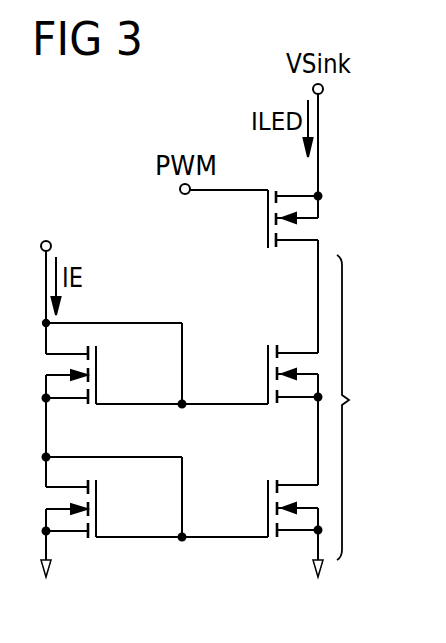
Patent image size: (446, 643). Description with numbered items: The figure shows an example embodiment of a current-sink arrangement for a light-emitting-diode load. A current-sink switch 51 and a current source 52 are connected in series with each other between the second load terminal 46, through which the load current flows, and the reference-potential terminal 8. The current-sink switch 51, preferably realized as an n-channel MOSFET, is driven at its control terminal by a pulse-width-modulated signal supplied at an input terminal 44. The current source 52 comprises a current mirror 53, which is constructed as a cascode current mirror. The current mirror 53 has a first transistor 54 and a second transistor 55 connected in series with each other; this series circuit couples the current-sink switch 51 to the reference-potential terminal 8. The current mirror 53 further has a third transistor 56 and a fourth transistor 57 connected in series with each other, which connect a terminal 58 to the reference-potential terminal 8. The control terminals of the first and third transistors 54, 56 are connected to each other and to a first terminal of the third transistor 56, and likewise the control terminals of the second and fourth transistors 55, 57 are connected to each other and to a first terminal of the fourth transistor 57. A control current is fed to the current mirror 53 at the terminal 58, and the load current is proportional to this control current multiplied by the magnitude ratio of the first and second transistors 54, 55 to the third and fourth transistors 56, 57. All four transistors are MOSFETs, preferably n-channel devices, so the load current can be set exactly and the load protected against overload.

The reference-potential terminal 8 is at (48, 575).
The PWM control input 44 is at (184, 195).
The second load terminal 46 is at (313, 89).
The current-sink switch 51 is at (265, 219).
The current source 52 is at (366, 356).
The current mirror 53 is at (360, 407).
The first transistor 54 is at (265, 376).
The second transistor 55 is at (265, 509).
The third transistor 56 is at (103, 375).
The fourth transistor 57 is at (103, 509).
The terminal 58 is at (45, 240).